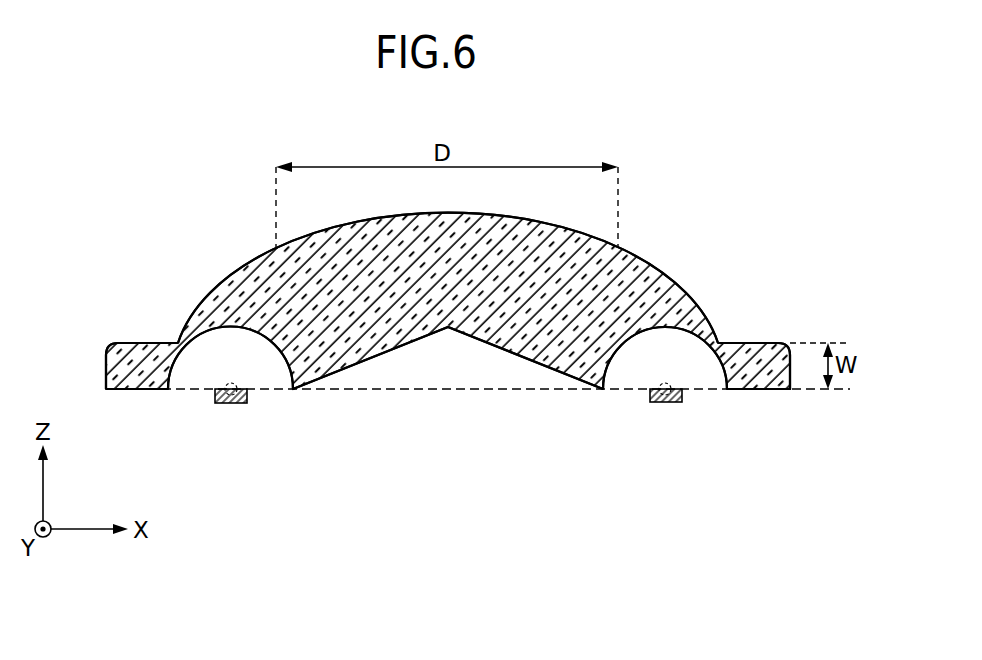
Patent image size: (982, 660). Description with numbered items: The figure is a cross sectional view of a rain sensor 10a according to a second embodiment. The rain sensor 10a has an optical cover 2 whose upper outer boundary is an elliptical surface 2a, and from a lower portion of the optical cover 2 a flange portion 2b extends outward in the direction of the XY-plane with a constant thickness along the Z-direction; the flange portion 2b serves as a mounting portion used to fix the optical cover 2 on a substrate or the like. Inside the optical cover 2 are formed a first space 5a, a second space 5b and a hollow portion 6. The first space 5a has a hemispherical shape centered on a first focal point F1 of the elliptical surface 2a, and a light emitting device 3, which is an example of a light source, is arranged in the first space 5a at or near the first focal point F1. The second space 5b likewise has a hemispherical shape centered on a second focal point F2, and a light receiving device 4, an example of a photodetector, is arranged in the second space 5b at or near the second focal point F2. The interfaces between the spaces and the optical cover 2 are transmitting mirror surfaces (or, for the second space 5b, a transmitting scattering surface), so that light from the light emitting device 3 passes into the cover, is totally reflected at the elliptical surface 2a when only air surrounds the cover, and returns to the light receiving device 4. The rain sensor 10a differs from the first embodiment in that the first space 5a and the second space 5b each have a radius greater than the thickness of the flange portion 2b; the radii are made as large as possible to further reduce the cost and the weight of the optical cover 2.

The rain sensor 10a is at (160, 188).
The optical cover 2 is at (655, 286).
The elliptical surface 2a is at (346, 226).
The flange portion 2b is at (755, 348).
The light emitting device 3 is at (218, 403).
The light receiving device 4 is at (677, 402).
The first space 5a is at (207, 374).
The second space 5b is at (688, 372).
The hollow portion 6 is at (460, 362).
The first focal point F1 is at (247, 404).
The second focal point F2 is at (650, 403).